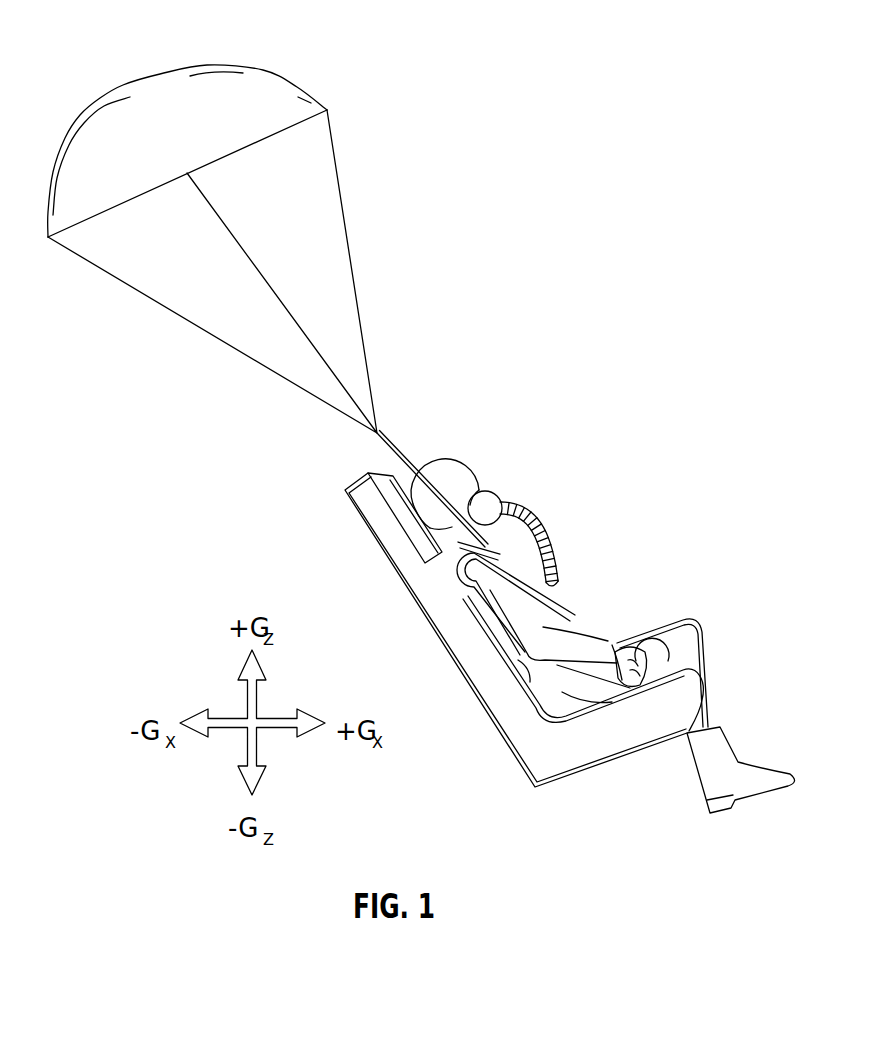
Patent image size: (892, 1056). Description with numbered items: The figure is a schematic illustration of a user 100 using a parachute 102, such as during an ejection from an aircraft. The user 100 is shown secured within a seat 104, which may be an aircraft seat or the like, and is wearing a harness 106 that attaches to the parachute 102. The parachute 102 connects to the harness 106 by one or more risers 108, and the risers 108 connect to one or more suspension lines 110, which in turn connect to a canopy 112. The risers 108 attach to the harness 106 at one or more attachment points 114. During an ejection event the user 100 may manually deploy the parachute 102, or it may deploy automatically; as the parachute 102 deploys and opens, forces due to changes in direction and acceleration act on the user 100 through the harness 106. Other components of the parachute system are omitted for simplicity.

The user 100 is at (704, 637).
The parachute 102 is at (428, 335).
The seat 104 is at (553, 768).
The harness 106 is at (552, 555).
The risers 108 is at (398, 452).
The suspension lines 110 is at (356, 278).
The canopy 112 is at (231, 90).
The attachment points 114 is at (494, 575).